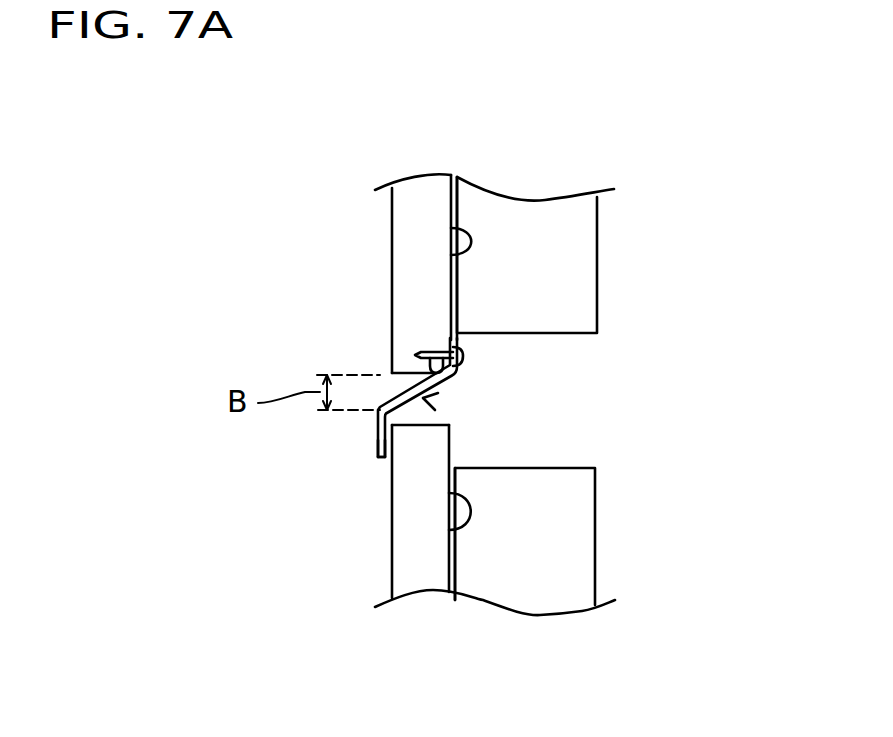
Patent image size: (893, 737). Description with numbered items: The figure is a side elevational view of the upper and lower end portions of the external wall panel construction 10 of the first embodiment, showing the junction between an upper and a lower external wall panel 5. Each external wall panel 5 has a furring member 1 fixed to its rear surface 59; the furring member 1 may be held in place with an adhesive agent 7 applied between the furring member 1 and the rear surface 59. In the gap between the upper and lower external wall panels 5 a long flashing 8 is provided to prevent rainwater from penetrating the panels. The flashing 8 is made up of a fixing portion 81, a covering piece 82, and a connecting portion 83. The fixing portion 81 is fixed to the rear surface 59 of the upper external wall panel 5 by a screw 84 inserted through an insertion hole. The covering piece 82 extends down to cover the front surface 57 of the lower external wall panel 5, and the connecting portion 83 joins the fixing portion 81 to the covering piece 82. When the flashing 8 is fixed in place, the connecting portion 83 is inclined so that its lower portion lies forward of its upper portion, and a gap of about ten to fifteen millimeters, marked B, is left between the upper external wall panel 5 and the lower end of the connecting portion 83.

The external wall panel construction 10 is at (426, 158).
The furring member 1 is at (562, 260).
The external wall panel 5 is at (403, 262).
The front surface 57 is at (390, 272).
The adhesive agent 7 is at (455, 217).
The rear surface 59 is at (450, 255).
The flashing 8 is at (437, 402).
The fixing portion 81 is at (457, 340).
The covering piece 82 is at (380, 438).
The connecting portion 83 is at (427, 372).
The screw 84 is at (423, 398).